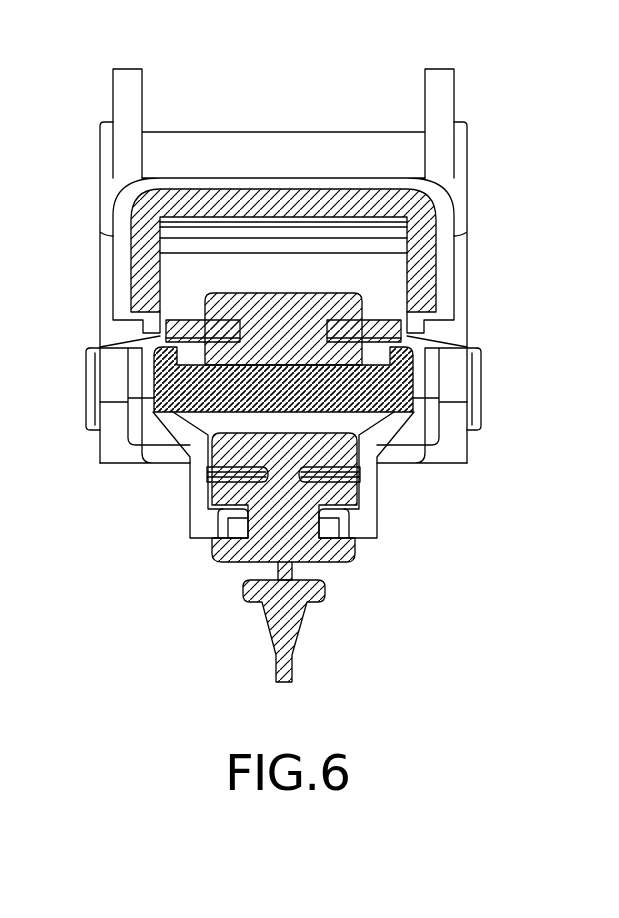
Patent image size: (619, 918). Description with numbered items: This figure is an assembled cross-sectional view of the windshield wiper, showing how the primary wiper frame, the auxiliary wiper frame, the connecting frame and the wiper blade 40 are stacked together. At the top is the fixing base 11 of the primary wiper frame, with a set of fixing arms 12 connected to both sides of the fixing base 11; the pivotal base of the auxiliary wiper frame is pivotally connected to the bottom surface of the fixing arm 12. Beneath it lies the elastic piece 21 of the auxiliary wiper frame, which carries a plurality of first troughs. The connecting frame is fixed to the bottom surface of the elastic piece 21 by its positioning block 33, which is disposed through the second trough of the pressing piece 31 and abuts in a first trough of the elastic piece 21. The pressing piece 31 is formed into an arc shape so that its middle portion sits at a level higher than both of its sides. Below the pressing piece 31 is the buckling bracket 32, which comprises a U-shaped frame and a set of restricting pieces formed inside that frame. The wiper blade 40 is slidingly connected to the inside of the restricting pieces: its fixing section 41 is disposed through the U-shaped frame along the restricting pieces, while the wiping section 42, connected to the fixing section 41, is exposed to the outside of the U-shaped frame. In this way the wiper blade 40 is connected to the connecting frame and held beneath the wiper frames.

The fixing base 11 is at (442, 97).
The fixing arm 12 is at (288, 197).
The elastic piece 21 is at (405, 325).
The pressing piece 31 is at (407, 377).
The buckling bracket 32 is at (215, 527).
The positioning block 33 is at (257, 308).
The wiper blade 40 is at (364, 557).
The fixing section 41 is at (288, 515).
The wiping section 42 is at (292, 658).